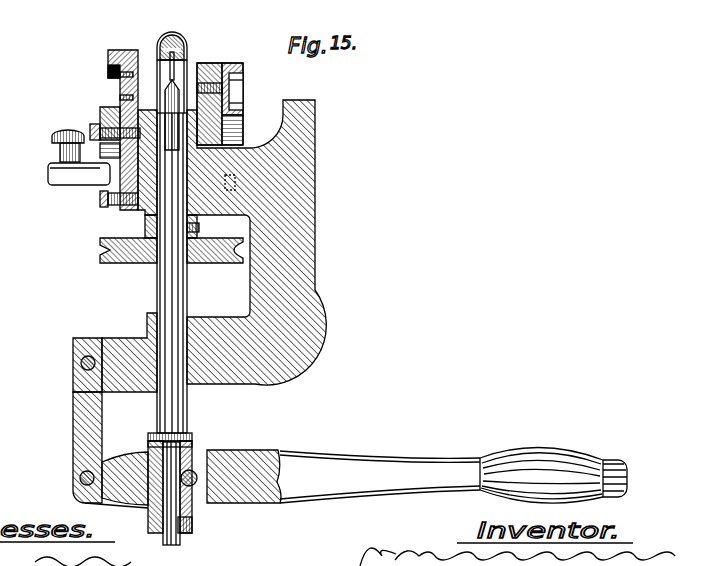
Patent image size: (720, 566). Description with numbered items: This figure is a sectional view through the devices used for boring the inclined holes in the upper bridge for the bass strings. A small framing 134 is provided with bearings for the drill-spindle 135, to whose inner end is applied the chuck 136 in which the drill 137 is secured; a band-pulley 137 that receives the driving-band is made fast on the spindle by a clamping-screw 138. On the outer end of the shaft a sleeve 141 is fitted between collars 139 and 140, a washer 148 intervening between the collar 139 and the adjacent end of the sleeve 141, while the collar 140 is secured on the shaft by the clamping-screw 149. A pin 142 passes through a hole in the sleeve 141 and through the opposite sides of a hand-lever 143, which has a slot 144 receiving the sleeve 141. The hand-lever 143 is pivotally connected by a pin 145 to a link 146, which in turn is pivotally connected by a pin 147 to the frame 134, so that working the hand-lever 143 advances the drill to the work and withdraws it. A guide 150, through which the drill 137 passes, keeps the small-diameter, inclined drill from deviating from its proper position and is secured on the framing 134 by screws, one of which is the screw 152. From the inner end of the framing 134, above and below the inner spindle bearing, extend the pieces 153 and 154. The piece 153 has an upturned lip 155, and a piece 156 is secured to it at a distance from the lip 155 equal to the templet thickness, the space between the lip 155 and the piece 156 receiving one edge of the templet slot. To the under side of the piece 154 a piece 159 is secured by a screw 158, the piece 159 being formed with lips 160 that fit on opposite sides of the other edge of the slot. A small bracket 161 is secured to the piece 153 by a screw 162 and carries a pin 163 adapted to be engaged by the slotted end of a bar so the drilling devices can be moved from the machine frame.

The framing 134 is at (306, 184).
The drill-spindle 135 is at (165, 296).
The chuck 136 is at (187, 58).
The drill 137 is at (190, 58).
The clamping-screw 138 is at (199, 229).
The collar 139 is at (195, 436).
The collar 140 is at (186, 535).
The sleeve 141 is at (147, 504).
The pin 142 is at (198, 470).
The hand-lever 143 is at (453, 475).
The slot 144 is at (200, 503).
The pin 145 is at (80, 480).
The link 146 is at (65, 447).
The pin 147 is at (74, 364).
The washer 148 is at (195, 441).
The clamping-screw 149 is at (193, 522).
The guide 150 is at (170, 34).
The screw 152 is at (92, 126).
The piece 153 is at (126, 50).
The piece 154 is at (206, 64).
The upturned lip 155 is at (108, 62).
The piece 156 is at (100, 110).
The screw 158 is at (243, 92).
The piece 159 is at (243, 82).
The lips 160 is at (243, 70).
The bracket 161 is at (79, 176).
The screw 162 is at (100, 207).
The pin 163 is at (60, 158).